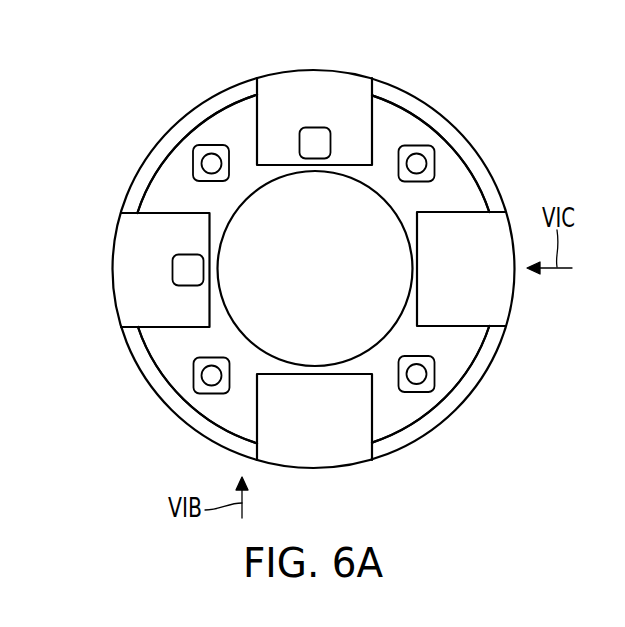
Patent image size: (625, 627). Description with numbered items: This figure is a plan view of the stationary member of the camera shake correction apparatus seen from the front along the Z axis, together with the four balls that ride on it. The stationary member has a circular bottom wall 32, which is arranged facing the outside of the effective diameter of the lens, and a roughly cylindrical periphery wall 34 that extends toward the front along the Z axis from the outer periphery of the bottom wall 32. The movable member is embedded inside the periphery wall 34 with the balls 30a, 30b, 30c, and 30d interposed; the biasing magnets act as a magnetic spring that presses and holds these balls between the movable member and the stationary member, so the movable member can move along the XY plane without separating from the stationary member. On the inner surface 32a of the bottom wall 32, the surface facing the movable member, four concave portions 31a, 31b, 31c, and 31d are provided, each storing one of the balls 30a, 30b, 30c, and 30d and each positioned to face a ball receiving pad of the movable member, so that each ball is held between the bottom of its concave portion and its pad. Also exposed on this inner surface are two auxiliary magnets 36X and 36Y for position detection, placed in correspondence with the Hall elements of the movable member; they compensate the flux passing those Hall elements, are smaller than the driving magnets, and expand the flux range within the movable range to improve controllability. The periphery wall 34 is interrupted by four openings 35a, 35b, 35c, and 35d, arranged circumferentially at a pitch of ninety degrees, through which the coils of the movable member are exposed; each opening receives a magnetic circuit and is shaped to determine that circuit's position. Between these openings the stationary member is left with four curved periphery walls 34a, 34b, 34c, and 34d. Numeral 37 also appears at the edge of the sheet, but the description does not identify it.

The ball 30a is at (211, 155).
The ball 30b is at (416, 153).
The ball 30c is at (430, 373).
The ball 30d is at (207, 370).
The concave portion 31a is at (192, 163).
The concave portion 31b is at (435, 162).
The concave portion 31c is at (417, 393).
The concave portion 31d is at (195, 358).
The bottom wall 32 is at (271, 72).
The inner surface 32a is at (390, 100).
The periphery wall 34 is at (397, 452).
The curved periphery wall 34a is at (130, 182).
The curved periphery wall 34b is at (488, 188).
The curved periphery wall 34c is at (490, 345).
The curved periphery wall 34d is at (193, 418).
The opening 35a is at (340, 84).
The opening 35b is at (497, 293).
The opening 35c is at (346, 450).
The opening 35d is at (133, 295).
The auxiliary magnet 36X is at (188, 270).
The auxiliary magnet 36Y is at (314, 143).
The member 37 is at (314, 618).